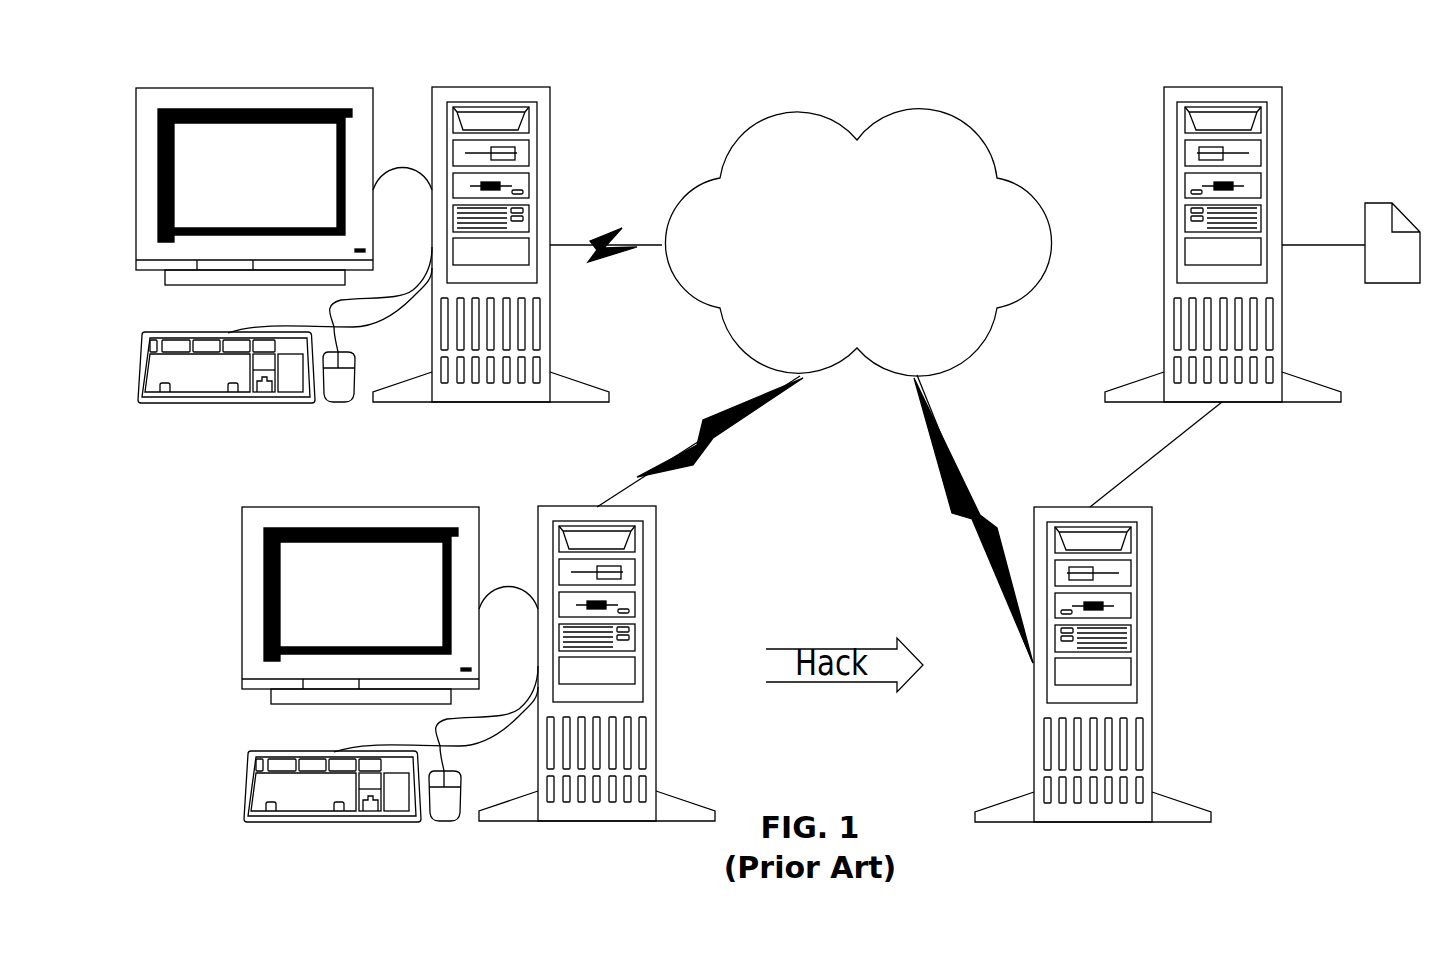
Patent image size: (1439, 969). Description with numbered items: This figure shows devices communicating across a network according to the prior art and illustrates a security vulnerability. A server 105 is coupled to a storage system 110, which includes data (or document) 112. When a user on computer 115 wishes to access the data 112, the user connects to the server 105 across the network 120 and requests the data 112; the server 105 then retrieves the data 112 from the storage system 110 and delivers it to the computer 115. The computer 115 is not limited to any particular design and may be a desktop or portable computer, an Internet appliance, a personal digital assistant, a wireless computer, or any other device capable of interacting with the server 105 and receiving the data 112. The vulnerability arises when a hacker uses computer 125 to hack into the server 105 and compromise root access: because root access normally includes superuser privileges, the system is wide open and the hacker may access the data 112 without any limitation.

The server 105 is at (1072, 507).
The storage system 110 is at (1205, 87).
The data 112 is at (1368, 204).
The computer 115 is at (176, 52).
The network 120 is at (790, 112).
The computer 125 is at (281, 472).